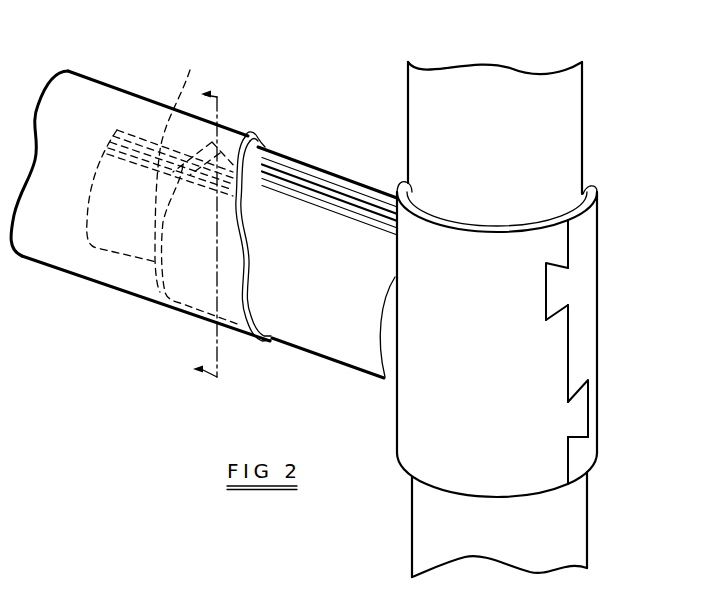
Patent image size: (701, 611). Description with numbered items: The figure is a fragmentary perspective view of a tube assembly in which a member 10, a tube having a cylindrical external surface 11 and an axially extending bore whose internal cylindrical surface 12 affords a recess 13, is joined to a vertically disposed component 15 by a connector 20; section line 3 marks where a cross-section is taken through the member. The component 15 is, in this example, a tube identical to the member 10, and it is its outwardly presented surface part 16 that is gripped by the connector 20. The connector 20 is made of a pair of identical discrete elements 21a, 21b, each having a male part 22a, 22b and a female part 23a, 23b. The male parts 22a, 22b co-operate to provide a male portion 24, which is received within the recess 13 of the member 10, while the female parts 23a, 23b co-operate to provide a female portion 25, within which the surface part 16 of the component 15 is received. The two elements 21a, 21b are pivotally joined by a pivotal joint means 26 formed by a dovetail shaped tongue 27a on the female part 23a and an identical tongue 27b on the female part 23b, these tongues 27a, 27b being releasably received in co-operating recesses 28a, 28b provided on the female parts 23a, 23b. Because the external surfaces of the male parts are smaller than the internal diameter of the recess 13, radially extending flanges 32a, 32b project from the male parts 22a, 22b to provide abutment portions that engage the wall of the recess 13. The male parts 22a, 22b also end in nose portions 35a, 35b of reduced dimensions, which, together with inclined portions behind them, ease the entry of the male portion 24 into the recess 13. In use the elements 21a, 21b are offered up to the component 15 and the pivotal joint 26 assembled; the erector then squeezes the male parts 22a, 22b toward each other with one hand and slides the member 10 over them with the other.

The section line 3- 3 is at (205, 239).
The member 10 is at (148, 100).
The cylindrical external surface 11 is at (100, 85).
The internal cylindrical surface 12 is at (262, 142).
The recess 13 is at (253, 138).
The component 15 is at (584, 90).
The outwardly presented surface part 16 is at (547, 221).
The connector 20 is at (509, 293).
The element 21a is at (497, 231).
The element 21b is at (652, 193).
The male part 22a is at (328, 340).
The male part 22b is at (305, 175).
The female part 23a is at (490, 484).
The female part 23b is at (659, 243).
The male portion 24 is at (371, 373).
The female portion 25 is at (604, 441).
The pivotal joint means 26 is at (585, 304).
The dovetail shaped tongue 27a is at (577, 410).
The tongue 27b is at (560, 282).
The recess 28a is at (560, 283).
The recess 28b is at (654, 396).
The flange 32a is at (352, 222).
The flange 32b is at (359, 158).
The nose portion 35a is at (108, 248).
The nose portion 35b is at (229, 66).